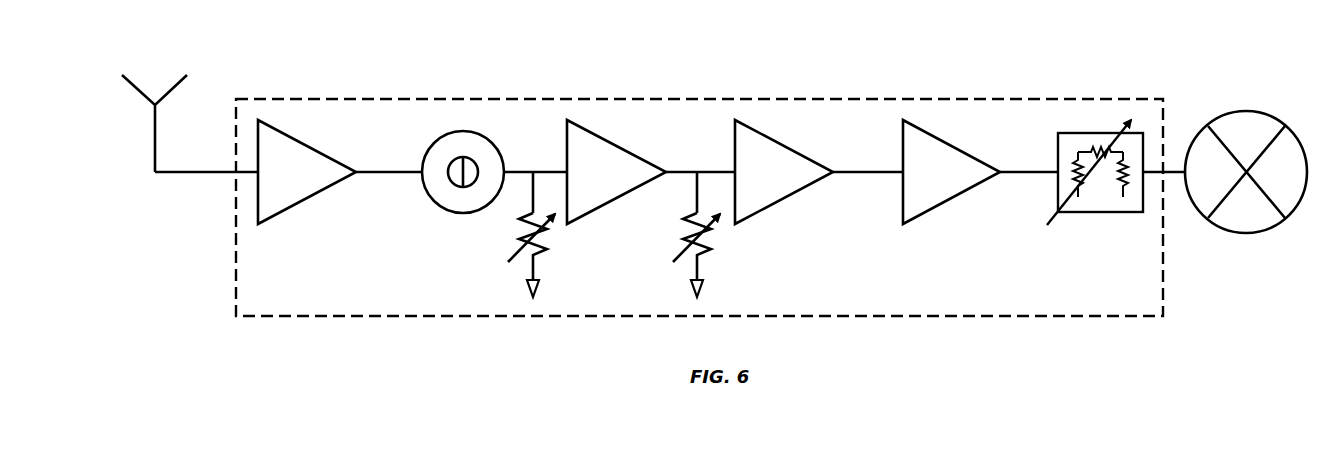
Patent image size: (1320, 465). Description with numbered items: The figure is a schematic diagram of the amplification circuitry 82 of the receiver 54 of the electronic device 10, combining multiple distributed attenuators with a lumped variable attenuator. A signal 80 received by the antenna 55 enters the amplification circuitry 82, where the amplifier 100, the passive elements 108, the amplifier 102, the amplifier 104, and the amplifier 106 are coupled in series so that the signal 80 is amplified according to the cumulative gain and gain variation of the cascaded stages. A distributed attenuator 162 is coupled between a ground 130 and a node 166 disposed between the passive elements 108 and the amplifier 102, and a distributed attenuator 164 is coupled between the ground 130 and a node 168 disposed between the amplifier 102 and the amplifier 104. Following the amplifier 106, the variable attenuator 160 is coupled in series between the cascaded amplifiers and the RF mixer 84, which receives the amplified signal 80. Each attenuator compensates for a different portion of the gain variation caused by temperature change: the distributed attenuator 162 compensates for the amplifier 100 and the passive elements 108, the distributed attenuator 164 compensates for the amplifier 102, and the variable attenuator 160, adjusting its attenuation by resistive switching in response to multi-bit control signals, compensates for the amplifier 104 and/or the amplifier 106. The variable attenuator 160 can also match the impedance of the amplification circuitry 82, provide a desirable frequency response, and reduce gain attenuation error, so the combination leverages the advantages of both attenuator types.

The electronic device 10 is at (994, 34).
The receiver 54 is at (952, 55).
The antenna 55 is at (138, 90).
The signal 80 is at (174, 172).
The amplification circuitry 82 is at (660, 99).
The RF mixer 84 is at (1247, 233).
The amplifier 100 is at (307, 200).
The amplifier 102 is at (617, 200).
The amplifier 104 is at (783, 198).
The amplifier 106 is at (950, 198).
The passive elements 108 is at (465, 213).
The ground 130 is at (525, 290).
The variable attenuator 160 is at (1100, 212).
The distributed attenuator 162 is at (510, 258).
The distributed attenuator 164 is at (674, 258).
The node 166 is at (513, 172).
The node 168 is at (679, 172).